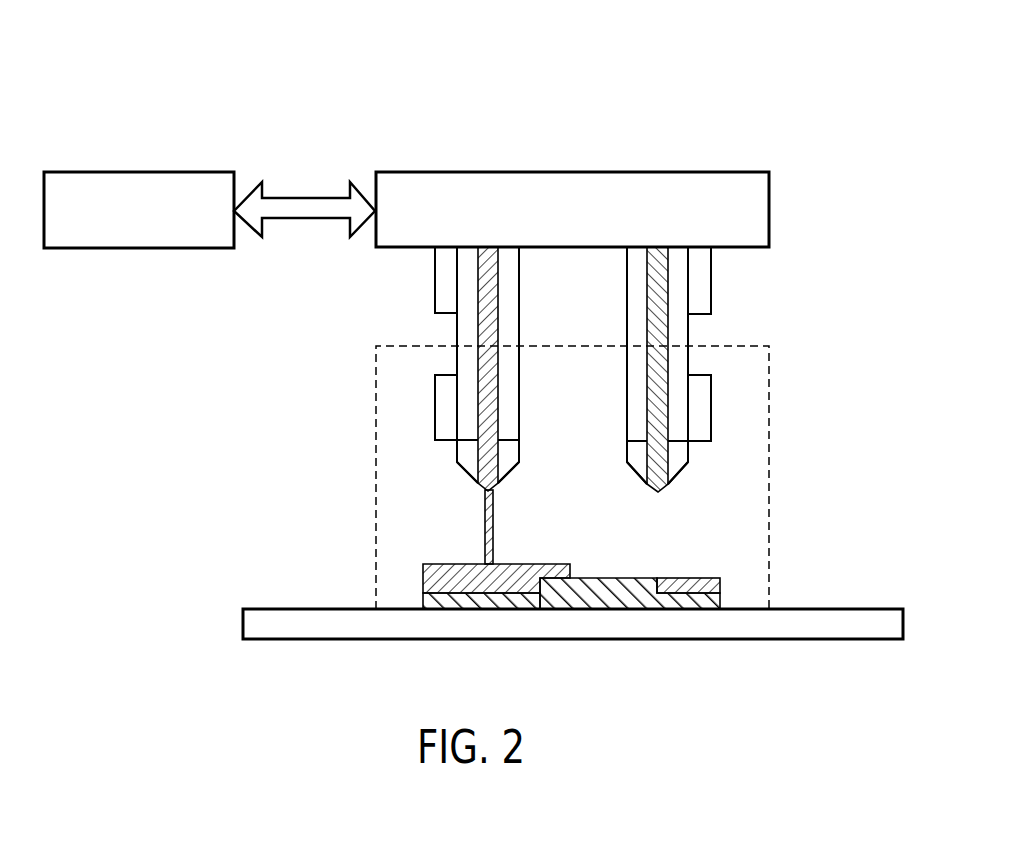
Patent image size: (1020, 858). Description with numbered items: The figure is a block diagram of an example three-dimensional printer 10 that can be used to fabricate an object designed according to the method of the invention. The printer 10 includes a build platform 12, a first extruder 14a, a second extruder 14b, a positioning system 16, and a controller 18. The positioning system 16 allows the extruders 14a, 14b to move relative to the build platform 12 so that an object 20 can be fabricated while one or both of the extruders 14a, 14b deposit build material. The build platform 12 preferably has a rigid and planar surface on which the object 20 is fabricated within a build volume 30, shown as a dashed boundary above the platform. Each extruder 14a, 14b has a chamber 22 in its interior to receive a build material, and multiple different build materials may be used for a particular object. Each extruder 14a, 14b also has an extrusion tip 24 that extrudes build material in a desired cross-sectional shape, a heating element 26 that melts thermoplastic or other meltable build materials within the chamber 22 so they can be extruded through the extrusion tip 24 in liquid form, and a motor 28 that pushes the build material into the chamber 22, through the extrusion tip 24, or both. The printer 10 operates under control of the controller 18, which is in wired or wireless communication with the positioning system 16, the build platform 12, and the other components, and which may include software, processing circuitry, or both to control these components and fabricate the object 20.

The printer 10 is at (348, 63).
The build platform 12 is at (303, 605).
The first extruder 14a is at (408, 363).
The second extruder 14b is at (742, 362).
The positioning system 16 is at (592, 169).
The controller 18 is at (139, 169).
The object 20 is at (615, 564).
The chamber 22 is at (643, 326).
The extrusion tip 24 is at (634, 477).
The heating element 26 is at (432, 417).
The motor 28 is at (431, 299).
The build volume 30 is at (372, 520).